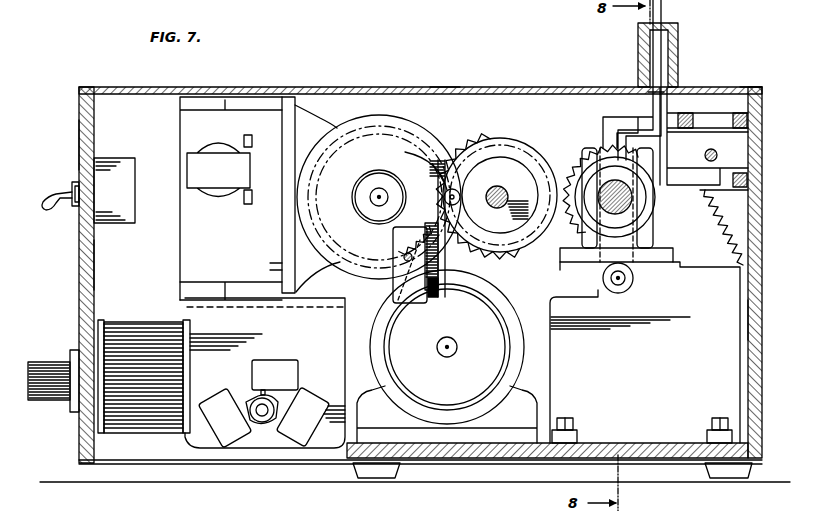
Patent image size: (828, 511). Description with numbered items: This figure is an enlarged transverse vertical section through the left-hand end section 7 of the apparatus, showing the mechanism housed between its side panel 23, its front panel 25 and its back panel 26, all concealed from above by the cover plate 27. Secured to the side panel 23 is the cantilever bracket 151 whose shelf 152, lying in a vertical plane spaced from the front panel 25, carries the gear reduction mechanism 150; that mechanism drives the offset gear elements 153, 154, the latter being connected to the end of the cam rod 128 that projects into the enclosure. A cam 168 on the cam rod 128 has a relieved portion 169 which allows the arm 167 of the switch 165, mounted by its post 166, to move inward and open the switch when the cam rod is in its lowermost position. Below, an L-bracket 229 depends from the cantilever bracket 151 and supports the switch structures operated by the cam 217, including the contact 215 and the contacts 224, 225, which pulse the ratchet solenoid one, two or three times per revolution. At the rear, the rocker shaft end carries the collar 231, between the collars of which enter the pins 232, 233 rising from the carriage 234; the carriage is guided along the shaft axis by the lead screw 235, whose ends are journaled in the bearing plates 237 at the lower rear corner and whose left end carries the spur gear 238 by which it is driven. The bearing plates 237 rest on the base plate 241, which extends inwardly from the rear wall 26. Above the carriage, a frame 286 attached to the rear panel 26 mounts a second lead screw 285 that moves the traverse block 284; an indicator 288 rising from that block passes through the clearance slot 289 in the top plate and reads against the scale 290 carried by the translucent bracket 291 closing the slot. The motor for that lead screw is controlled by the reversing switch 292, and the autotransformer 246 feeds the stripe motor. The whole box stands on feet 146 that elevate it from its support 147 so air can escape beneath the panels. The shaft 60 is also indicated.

The left-hand end section 7 is at (87, 82).
The side panel 23 is at (105, 266).
The front panel 25 is at (79, 143).
The back panel 26 is at (757, 313).
The cover plate 27 is at (443, 87).
The shaft 60 is at (622, 203).
The cam rod 128 is at (505, 185).
The feet 146 is at (390, 470).
The support 147 is at (655, 478).
The gear reduction mechanism 150 is at (366, 128).
The cantilever bracket 151 is at (235, 103).
The shelf 152 is at (310, 97).
The offset gear element 153 is at (418, 145).
The offset gear element 154 is at (485, 133).
The switch 165 is at (392, 284).
The post 166 is at (396, 246).
The arm 167 is at (405, 152).
The cam 168 is at (497, 165).
The relieved portion 169 is at (465, 143).
The contact 215 is at (212, 405).
The cam 217 is at (262, 422).
The contact 224 is at (310, 435).
The contact 225 is at (283, 368).
The L-bracket 229 is at (265, 373).
The collar 231 is at (583, 183).
The pin 232 is at (562, 256).
The pin 233 is at (648, 231).
The carriage 234 is at (577, 262).
The lead screw 235 is at (633, 285).
The bearing plate 237 is at (645, 352).
The spur gear 238 is at (725, 230).
The base plate 241 is at (483, 455).
The autotransformer 246 is at (50, 362).
The traverse block 284 is at (740, 148).
The lead screw 285 is at (717, 155).
The frame 286 is at (733, 200).
The indicator 288 is at (652, 60).
The clearance slot 289 is at (652, 92).
The scale 290 is at (752, 86).
The bracket 291 is at (678, 48).
The reversing switch 292 is at (47, 196).